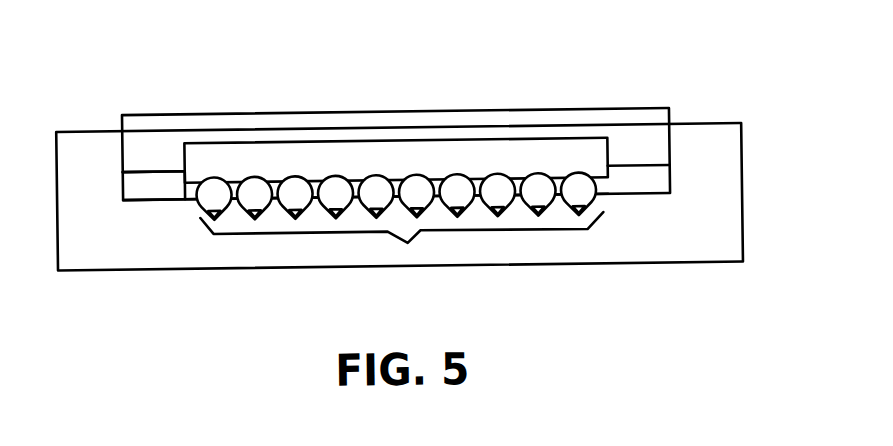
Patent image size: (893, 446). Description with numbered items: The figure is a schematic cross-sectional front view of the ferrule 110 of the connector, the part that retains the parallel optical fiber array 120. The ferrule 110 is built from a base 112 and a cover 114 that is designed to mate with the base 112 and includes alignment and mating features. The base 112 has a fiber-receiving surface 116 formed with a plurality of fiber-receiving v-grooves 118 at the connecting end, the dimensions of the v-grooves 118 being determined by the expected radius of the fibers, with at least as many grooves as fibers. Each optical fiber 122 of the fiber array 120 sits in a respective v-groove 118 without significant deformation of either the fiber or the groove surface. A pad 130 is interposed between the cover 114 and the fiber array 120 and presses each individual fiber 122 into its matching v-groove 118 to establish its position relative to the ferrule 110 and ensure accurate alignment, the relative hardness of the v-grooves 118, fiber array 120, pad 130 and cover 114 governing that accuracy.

The ferrule 110 is at (196, 70).
The base 112 is at (708, 227).
The cover 114 is at (645, 128).
The fiber-receiving surface 116 is at (157, 197).
The v-grooves 118 is at (482, 194).
The parallel fiber array 120 is at (407, 243).
The optical fiber 122 is at (382, 187).
The pad 130 is at (560, 149).